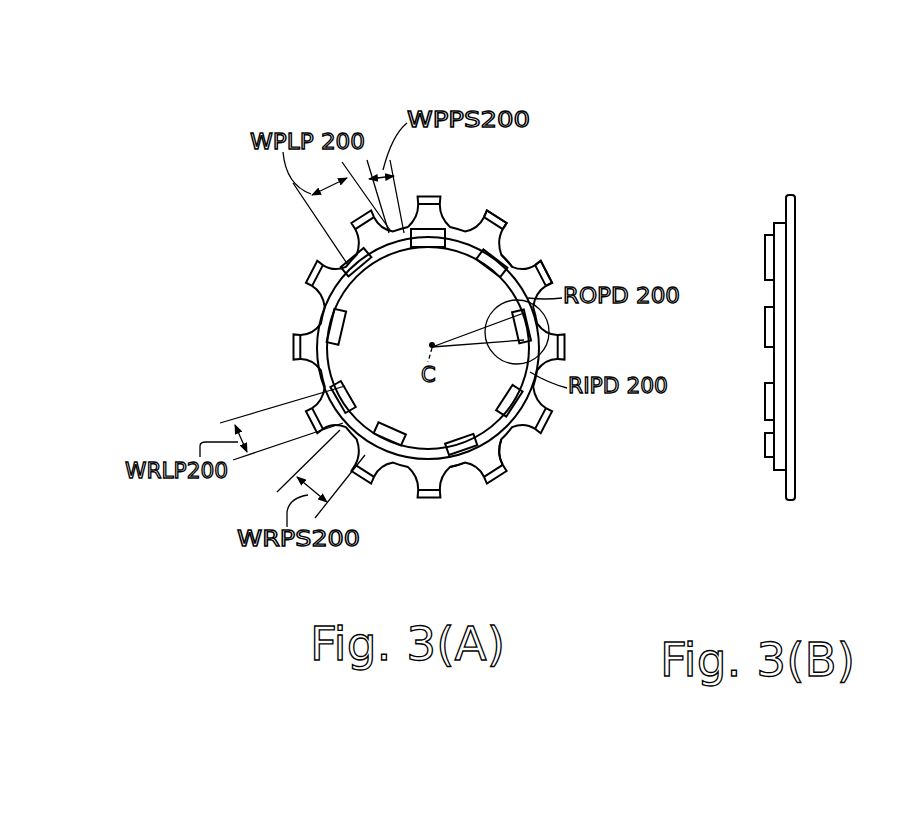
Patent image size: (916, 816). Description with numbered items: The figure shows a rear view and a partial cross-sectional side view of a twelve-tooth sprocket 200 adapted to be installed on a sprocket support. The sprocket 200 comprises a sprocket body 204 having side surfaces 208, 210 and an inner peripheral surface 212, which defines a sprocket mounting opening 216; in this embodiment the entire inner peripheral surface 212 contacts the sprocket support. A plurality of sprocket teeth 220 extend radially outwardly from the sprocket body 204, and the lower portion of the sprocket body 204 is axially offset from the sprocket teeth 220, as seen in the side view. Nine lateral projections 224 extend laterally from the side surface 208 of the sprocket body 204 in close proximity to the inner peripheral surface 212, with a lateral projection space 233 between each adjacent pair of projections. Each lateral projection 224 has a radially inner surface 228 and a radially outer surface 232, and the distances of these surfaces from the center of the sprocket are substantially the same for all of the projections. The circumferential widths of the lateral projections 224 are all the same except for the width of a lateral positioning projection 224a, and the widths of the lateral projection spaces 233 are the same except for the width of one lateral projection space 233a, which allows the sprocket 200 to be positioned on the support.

In FIG. 3A, the sprocket 200 is at (247, 196).
In FIG. 3B, the sprocket 200 is at (806, 152).
In FIG. 3A, the sprocket body 204 is at (519, 282).
In FIG. 3B, the sprocket body 204 is at (782, 222).
In FIG. 3A, the side surface 208 is at (505, 280).
In FIG. 3B, the side surface 208 is at (777, 231).
In FIG. 3B, the side surface 210 is at (795, 224).
In FIG. 3A, the inner peripheral surface 212 is at (340, 369).
In FIG. 3A, the sprocket mounting opening 216 is at (468, 240).
In FIG. 3A, the sprocket teeth 220 is at (505, 477).
In FIG. 3B, the sprocket teeth 220 is at (795, 209).
In FIG. 3A, the lateral projection 224 is at (322, 320).
In FIG. 3B, the lateral projection 224 is at (765, 333).
In FIG. 3A, the lateral positioning projection 224a is at (372, 273).
In FIG. 3A, the radially inner surface 228 is at (510, 424).
In FIG. 3A, the radially outer surface 232 is at (459, 457).
In FIG. 3A, the lateral projection space 233 is at (376, 432).
In FIG. 3A, the lateral projection space 233a is at (404, 247).